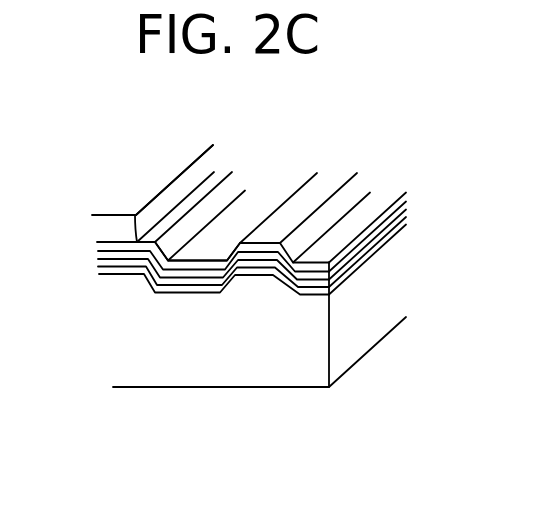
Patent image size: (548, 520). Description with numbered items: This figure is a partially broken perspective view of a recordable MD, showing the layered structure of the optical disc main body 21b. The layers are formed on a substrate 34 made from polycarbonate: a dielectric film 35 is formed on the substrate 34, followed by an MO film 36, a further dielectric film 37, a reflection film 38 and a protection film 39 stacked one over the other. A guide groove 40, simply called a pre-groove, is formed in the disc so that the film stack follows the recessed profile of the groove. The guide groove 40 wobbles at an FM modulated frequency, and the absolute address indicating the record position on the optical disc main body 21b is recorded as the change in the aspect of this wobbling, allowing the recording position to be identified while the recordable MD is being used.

The optical disc main body 21b is at (148, 182).
The substrate 34 is at (298, 377).
The dielectric film 35 is at (100, 269).
The MO film 36 is at (97, 264).
The dielectric film 37 is at (98, 254).
The reflection film 38 is at (97, 245).
The protection film 39 is at (113, 227).
The guide groove 40 is at (209, 250).